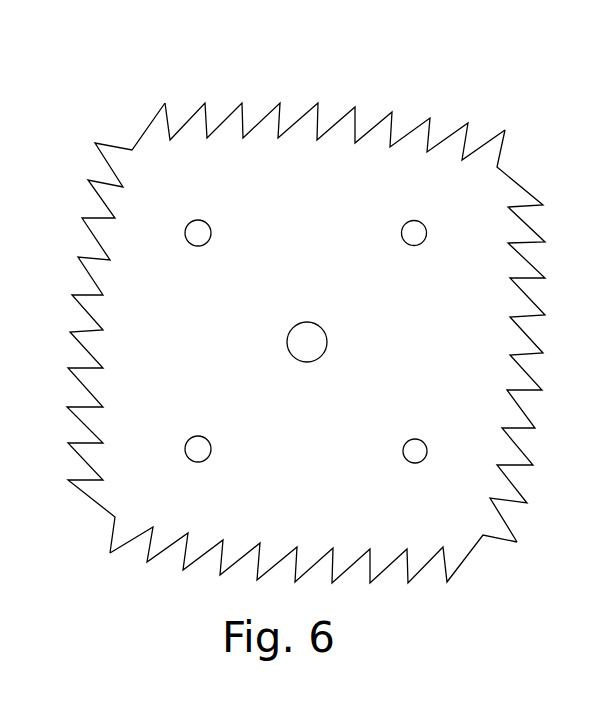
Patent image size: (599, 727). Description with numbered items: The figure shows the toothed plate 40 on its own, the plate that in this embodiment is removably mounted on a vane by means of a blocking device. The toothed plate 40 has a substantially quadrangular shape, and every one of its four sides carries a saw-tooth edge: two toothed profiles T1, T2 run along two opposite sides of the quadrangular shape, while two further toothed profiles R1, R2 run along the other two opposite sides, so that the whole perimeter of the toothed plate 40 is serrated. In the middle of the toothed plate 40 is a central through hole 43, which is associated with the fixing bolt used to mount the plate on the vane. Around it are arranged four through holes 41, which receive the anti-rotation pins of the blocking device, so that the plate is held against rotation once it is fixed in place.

The toothed plate 40 is at (308, 326).
The through holes 41 is at (193, 246).
The central through hole 43 is at (307, 338).
The toothed profile T1 is at (388, 122).
The toothed profile T2 is at (190, 555).
The toothed profile R1 is at (532, 393).
The toothed profile R2 is at (95, 292).